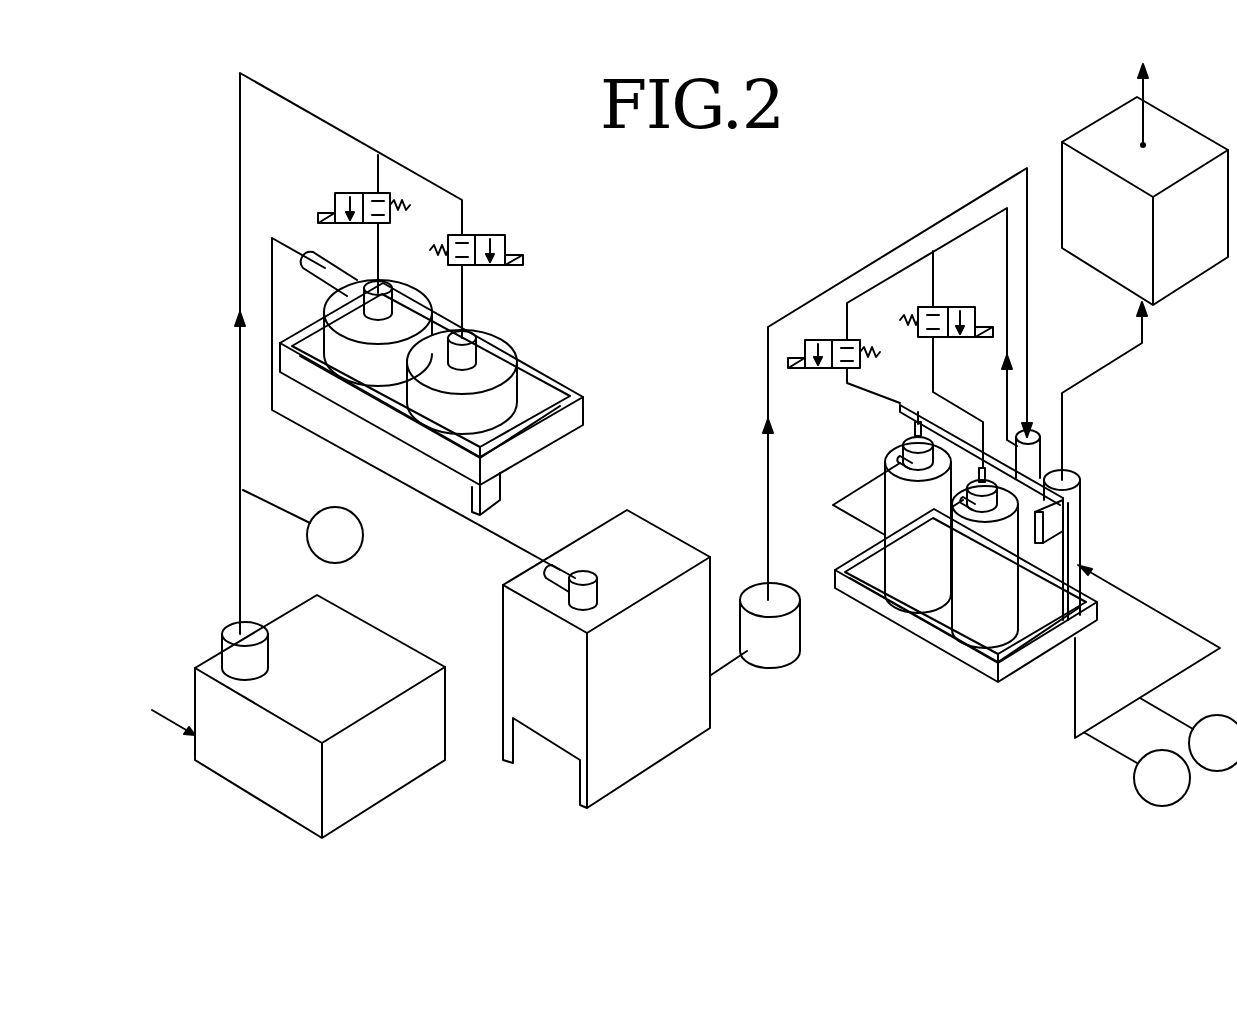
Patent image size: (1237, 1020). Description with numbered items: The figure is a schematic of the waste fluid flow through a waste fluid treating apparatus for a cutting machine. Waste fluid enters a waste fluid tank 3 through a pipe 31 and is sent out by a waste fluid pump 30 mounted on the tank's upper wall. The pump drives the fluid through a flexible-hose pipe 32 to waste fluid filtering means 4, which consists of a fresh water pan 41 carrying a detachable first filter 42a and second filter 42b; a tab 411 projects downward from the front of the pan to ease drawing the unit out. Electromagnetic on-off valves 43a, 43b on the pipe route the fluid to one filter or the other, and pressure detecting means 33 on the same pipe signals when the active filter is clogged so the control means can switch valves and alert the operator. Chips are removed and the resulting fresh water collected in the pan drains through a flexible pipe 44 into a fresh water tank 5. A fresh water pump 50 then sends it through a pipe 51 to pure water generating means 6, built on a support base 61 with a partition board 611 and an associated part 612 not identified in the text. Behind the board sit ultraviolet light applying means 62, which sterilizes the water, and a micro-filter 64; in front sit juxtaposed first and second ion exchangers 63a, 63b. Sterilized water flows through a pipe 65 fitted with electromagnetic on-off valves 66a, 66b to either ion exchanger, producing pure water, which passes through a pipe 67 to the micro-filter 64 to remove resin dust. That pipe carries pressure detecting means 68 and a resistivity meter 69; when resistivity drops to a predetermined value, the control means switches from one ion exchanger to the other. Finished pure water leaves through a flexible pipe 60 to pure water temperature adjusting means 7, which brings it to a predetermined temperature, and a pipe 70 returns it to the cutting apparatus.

The waste fluid tank 3 is at (402, 628).
The waste fluid pump 30 is at (236, 622).
The pipe 31 is at (160, 712).
The pipe 32 is at (238, 388).
The pressure detecting means 33 is at (303, 526).
The waste fluid filtering means 4 is at (444, 357).
The fresh water pan 41 is at (558, 432).
The tab 411 is at (487, 492).
The first filter 42a is at (400, 292).
The second filter 42b is at (491, 345).
The electromagnetic on-off valve 43a is at (352, 193).
The electromagnetic on-off valve 43b is at (488, 235).
The pipe 44 is at (318, 443).
The fresh water tank 5 is at (662, 520).
The fresh water pump 50 is at (796, 642).
The pipe 51 is at (768, 405).
The pure water generating means 6 is at (1011, 507).
The support base 61 is at (1017, 663).
The partition board 611 is at (1057, 556).
The bracket 612 is at (1053, 517).
The ultraviolet light applying means 62 is at (1043, 440).
The first ion exchanger 63a is at (890, 455).
The second ion exchanger 63b is at (980, 618).
The micro-filter 64 is at (1083, 532).
The pipe 65 is at (1005, 384).
The electromagnetic on-off valve 66a is at (828, 340).
The electromagnetic on-off valve 66b is at (956, 307).
The pipe 67 is at (852, 520).
The pressure detecting means 68 is at (1137, 769).
The resistivity meter 69 is at (1188, 734).
The pipe 60 is at (1104, 368).
The pure water temperature adjusting means 7 is at (1094, 113).
The pipe 70 is at (1147, 92).